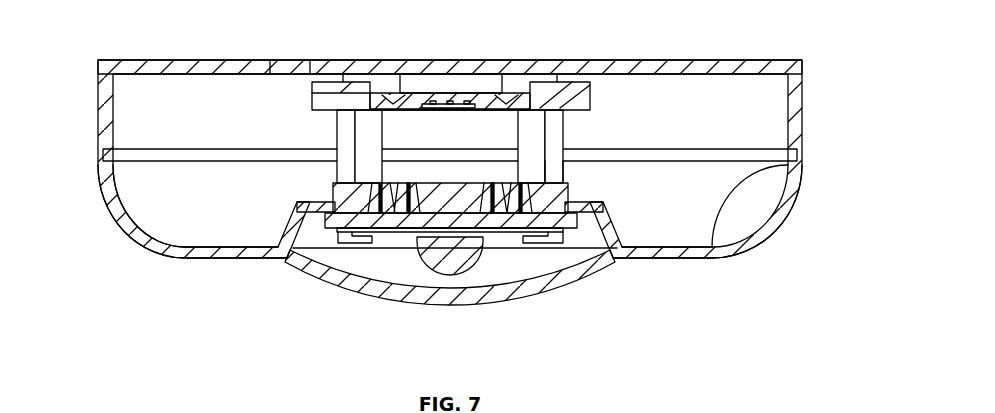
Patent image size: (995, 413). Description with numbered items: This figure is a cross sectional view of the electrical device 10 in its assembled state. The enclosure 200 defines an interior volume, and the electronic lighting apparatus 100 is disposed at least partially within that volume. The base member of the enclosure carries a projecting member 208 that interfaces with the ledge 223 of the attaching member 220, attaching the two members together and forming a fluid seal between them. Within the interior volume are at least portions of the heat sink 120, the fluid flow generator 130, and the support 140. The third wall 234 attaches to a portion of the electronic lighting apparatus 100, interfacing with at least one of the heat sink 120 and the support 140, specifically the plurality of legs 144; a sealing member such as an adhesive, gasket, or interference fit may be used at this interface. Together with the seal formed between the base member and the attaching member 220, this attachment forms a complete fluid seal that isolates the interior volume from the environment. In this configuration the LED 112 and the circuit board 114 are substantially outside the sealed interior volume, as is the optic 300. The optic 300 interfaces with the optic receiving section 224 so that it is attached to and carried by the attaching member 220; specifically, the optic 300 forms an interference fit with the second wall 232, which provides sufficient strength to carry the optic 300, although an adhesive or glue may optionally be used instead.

The electrical device 10 is at (20, 54).
The electronic lighting apparatus 100 is at (263, 121).
The LED 112 is at (460, 253).
The circuit board 114 is at (398, 232).
The heat sink 120 is at (530, 203).
The fluid flow generator 130 is at (503, 100).
The support 140 is at (555, 135).
The plurality of legs 144 is at (555, 172).
The enclosure 200 is at (96, 171).
The projecting member 208 is at (812, 86).
The attaching member 220 is at (782, 237).
The ledge 223 is at (800, 161).
The optic receiving section 224 is at (205, 260).
The second wall 232 is at (303, 227).
The third wall 234 is at (323, 205).
The optic 300 is at (502, 298).